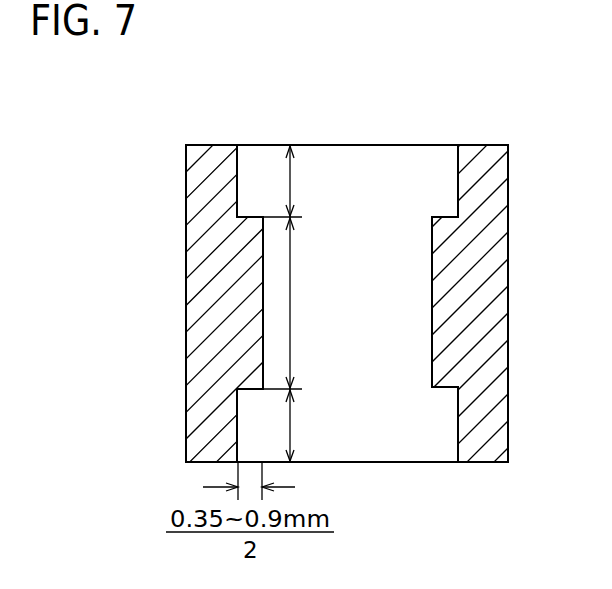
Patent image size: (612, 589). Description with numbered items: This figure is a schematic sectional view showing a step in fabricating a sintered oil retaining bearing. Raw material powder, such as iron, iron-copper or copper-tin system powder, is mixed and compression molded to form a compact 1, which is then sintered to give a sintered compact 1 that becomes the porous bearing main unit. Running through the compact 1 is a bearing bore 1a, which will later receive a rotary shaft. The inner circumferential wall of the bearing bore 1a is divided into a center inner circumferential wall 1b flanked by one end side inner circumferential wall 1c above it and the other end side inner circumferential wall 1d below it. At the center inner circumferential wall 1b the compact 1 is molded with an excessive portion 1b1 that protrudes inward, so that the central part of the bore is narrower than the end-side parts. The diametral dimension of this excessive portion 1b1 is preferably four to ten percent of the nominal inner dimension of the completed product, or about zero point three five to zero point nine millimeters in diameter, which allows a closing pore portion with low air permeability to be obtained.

The compact 1 is at (488, 177).
The bearing bore 1a is at (348, 158).
The center inner circumferential wall 1b is at (307, 303).
The excessive portion 1b1 is at (435, 280).
The one end side inner circumferential wall 1c is at (295, 181).
The other end side inner circumferential wall 1d is at (296, 425).